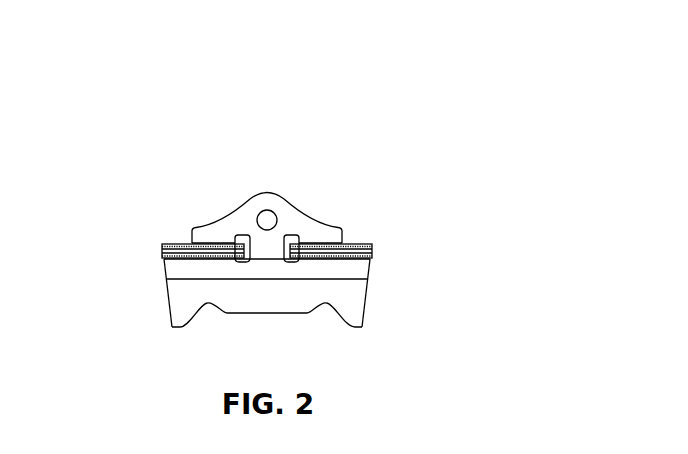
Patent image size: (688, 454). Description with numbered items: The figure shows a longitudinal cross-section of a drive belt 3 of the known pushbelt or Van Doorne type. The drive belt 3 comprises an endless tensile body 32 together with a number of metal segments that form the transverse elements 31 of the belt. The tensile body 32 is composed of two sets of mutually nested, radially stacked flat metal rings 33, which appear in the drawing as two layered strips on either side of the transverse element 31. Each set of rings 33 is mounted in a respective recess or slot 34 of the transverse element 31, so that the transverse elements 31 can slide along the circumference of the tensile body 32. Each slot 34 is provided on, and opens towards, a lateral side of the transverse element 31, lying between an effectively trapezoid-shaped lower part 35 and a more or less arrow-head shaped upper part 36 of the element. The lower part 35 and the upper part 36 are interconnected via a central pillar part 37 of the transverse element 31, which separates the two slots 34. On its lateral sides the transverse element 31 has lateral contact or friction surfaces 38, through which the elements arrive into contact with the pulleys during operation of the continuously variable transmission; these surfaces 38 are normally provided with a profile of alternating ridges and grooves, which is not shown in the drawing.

The drive belt 3 is at (313, 82).
The transverse element 31 is at (297, 200).
The endless tensile body 32 is at (161, 240).
The flat metal rings 33 is at (168, 253).
The slot 34 is at (205, 243).
The lower part 35 is at (267, 293).
The upper part 36 is at (267, 197).
The central pillar part 37 is at (267, 248).
The lateral contact or friction surfaces 38 is at (165, 295).